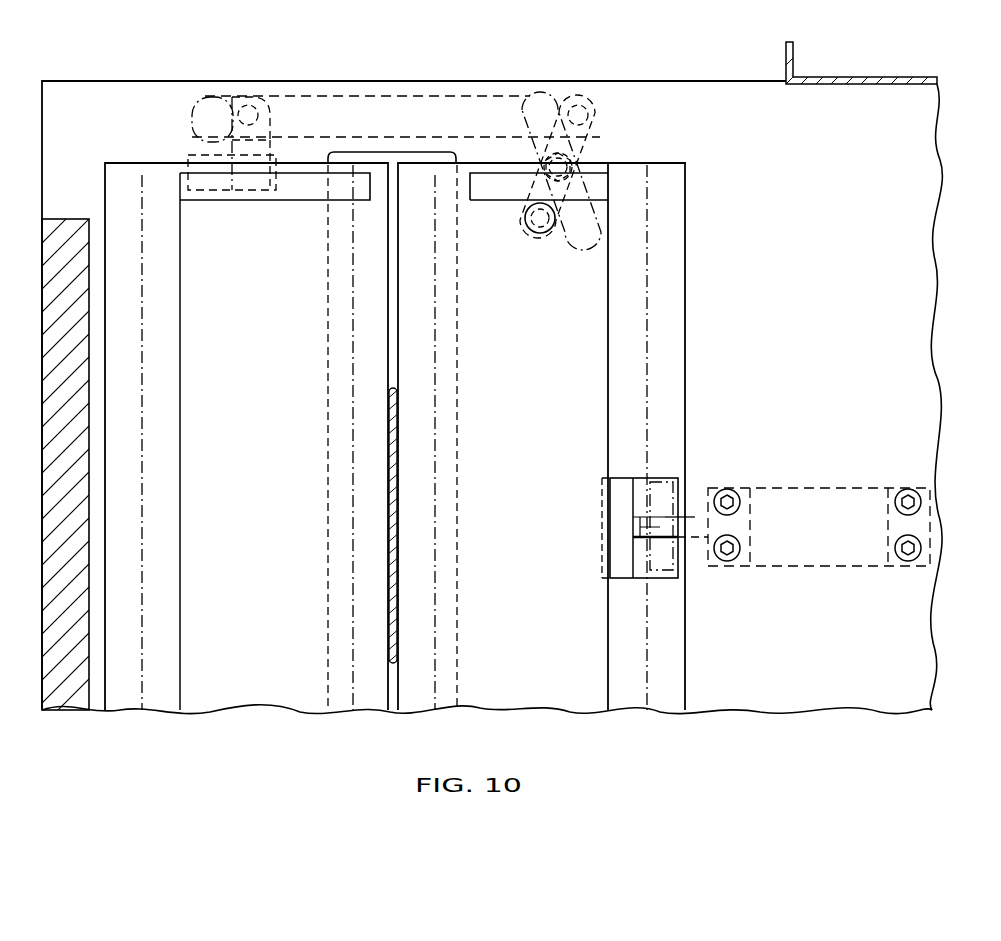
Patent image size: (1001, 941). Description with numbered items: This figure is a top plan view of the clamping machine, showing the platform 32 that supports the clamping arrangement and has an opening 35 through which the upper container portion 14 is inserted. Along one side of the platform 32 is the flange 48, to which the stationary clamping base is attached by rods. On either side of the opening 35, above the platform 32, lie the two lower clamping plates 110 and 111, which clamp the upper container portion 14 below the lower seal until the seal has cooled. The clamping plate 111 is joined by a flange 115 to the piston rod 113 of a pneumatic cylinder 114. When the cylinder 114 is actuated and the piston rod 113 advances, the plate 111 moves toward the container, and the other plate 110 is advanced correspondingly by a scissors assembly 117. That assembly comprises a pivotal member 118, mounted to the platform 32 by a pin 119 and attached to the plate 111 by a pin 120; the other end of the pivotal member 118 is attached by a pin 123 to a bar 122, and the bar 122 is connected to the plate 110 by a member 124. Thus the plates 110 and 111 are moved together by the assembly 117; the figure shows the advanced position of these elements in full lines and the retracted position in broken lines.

The platform 32 is at (140, 86).
The flange 48 is at (66, 697).
The lower clamping plate 110 is at (297, 703).
The lower clamping plate 111 is at (489, 693).
The upper container portion 14 is at (396, 530).
The opening 35 is at (360, 151).
The bar 122 is at (416, 96).
The member 124 is at (193, 139).
The scissors assembly 117 is at (566, 100).
The pin 123 is at (590, 114).
The pivotal member 118 is at (598, 137).
The pin 119 is at (582, 166).
The pin 120 is at (538, 234).
The flange 115 is at (625, 485).
The piston rod 113 is at (695, 516).
The pneumatic cylinder 114 is at (813, 490).